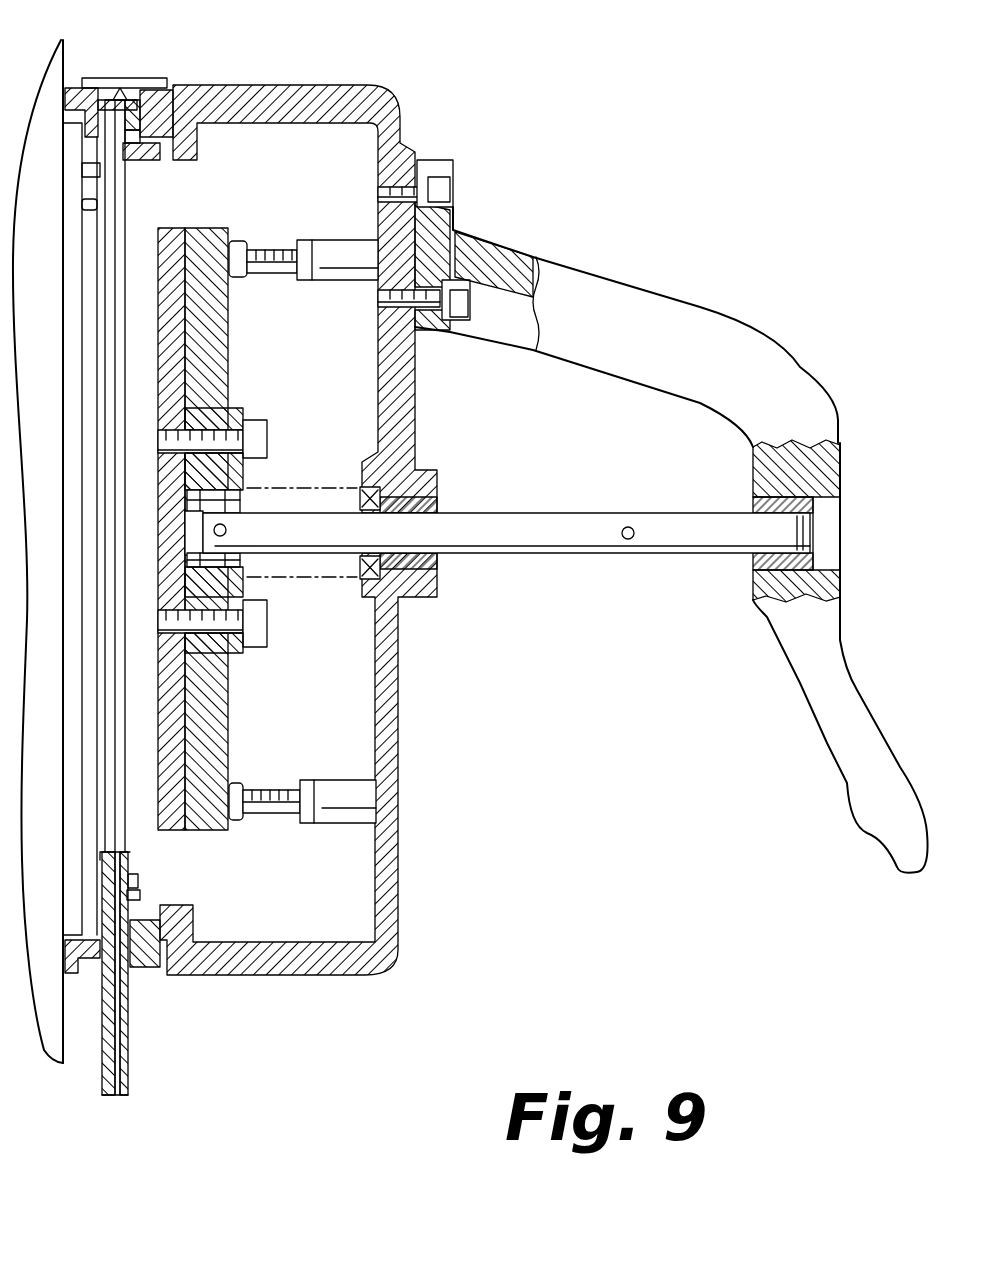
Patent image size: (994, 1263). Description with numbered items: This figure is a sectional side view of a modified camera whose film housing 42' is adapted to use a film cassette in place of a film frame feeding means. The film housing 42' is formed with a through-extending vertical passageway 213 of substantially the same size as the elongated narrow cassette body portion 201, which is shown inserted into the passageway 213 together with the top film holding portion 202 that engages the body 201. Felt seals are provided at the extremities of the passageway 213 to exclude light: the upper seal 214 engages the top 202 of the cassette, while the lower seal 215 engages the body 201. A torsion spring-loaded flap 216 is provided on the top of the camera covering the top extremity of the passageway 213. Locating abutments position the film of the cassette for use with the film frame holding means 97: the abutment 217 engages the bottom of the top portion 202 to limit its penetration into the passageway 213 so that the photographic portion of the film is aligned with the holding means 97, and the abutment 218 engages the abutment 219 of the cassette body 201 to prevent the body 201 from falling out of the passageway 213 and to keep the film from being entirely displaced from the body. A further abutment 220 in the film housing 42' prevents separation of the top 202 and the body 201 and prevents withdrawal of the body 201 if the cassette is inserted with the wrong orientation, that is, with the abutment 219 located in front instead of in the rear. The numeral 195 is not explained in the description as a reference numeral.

The film housing 42' is at (544, 530).
The film frame holding means 97 is at (252, 411).
The plate 195 is at (86, 201).
The cassette body portion 201 is at (125, 1104).
The top film holding portion 202 is at (160, 102).
The vertical passageway 213 is at (126, 839).
The felt seal 214 is at (100, 97).
The felt seal 215 is at (143, 967).
The torsion spring-loaded flap 216 is at (152, 80).
The locating abutment 217 is at (144, 161).
The locating abutment 218 is at (141, 900).
The abutment 219 is at (140, 882).
The abutment 220 is at (90, 166).